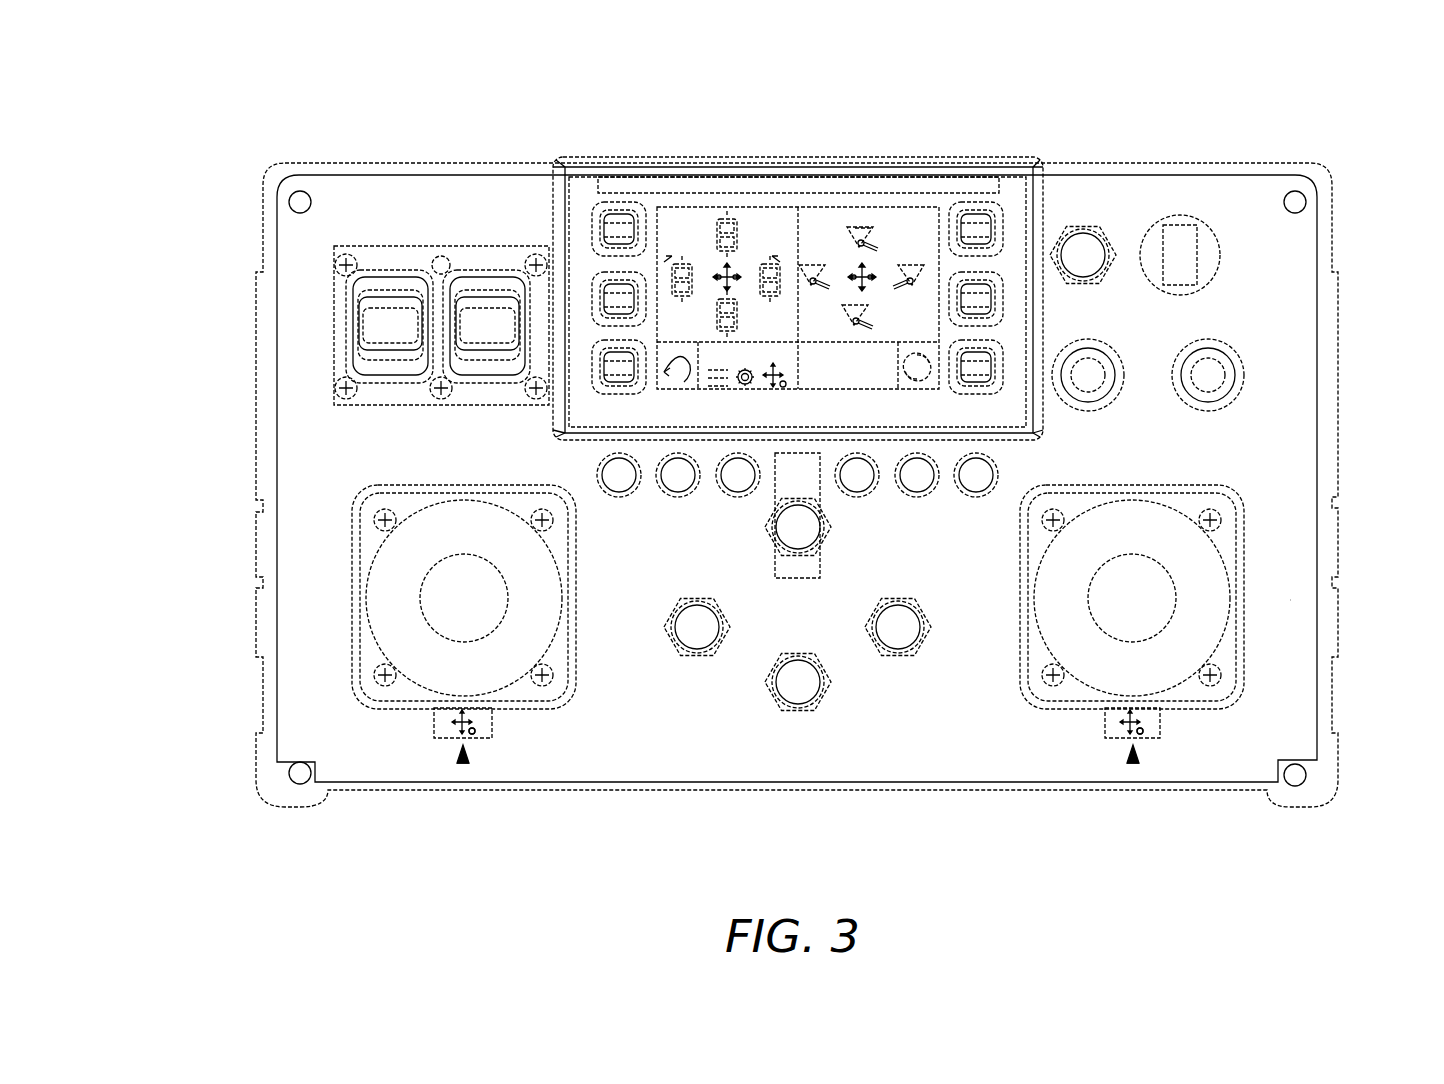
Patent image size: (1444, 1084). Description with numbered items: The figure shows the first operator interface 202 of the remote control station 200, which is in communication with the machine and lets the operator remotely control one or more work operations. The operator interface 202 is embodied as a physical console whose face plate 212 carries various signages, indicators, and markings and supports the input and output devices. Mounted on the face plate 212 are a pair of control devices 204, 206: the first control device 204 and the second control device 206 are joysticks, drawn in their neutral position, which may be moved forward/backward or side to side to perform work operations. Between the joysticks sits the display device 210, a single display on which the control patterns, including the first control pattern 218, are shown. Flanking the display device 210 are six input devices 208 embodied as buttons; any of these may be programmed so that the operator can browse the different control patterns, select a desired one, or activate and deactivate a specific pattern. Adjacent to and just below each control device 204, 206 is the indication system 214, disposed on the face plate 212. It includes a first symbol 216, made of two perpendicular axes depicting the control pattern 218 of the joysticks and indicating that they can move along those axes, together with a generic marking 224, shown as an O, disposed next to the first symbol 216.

The remote control station 200 is at (1318, 113).
The operator interface 202 is at (219, 238).
The first control device 204 is at (445, 617).
The second control device 206 is at (1158, 613).
The input device 208 is at (619, 370).
The display device 210 is at (675, 195).
The face plate 212 is at (1290, 245).
The indication system 214 is at (463, 765).
The first symbol 216 is at (455, 722).
The first control pattern 218 is at (900, 230).
The generic marking 224 is at (474, 733).